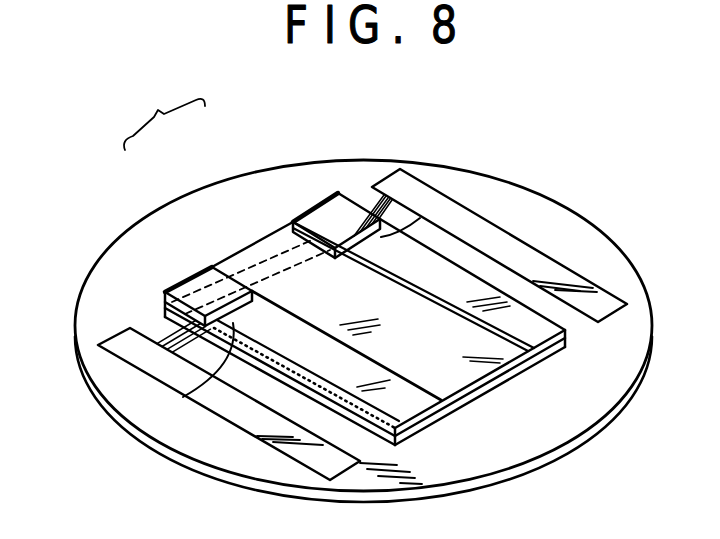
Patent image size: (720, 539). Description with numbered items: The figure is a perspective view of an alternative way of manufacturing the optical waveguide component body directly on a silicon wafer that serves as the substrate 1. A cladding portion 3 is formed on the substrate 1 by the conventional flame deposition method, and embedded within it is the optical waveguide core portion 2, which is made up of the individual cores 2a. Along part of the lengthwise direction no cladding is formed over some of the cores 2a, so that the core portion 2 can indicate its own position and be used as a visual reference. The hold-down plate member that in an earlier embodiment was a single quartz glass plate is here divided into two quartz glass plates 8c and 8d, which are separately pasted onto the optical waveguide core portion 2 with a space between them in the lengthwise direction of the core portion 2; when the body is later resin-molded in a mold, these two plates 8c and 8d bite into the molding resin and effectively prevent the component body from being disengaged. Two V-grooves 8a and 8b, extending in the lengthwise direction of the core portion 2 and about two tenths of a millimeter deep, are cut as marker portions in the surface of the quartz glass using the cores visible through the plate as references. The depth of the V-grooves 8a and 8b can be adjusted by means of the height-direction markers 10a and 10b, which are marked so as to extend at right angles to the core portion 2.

The substrate 1 is at (533, 438).
The optical waveguide core portion 2 is at (164, 116).
The core 2a is at (256, 268).
The cladding portion 3 is at (517, 375).
The V-groove 8a is at (183, 281).
The V-groove 8b is at (183, 396).
The quartz glass plate 8c is at (375, 402).
The quartz glass plate 8d is at (520, 323).
The height-direction marker 10a is at (142, 362).
The height-direction marker 10b is at (487, 237).